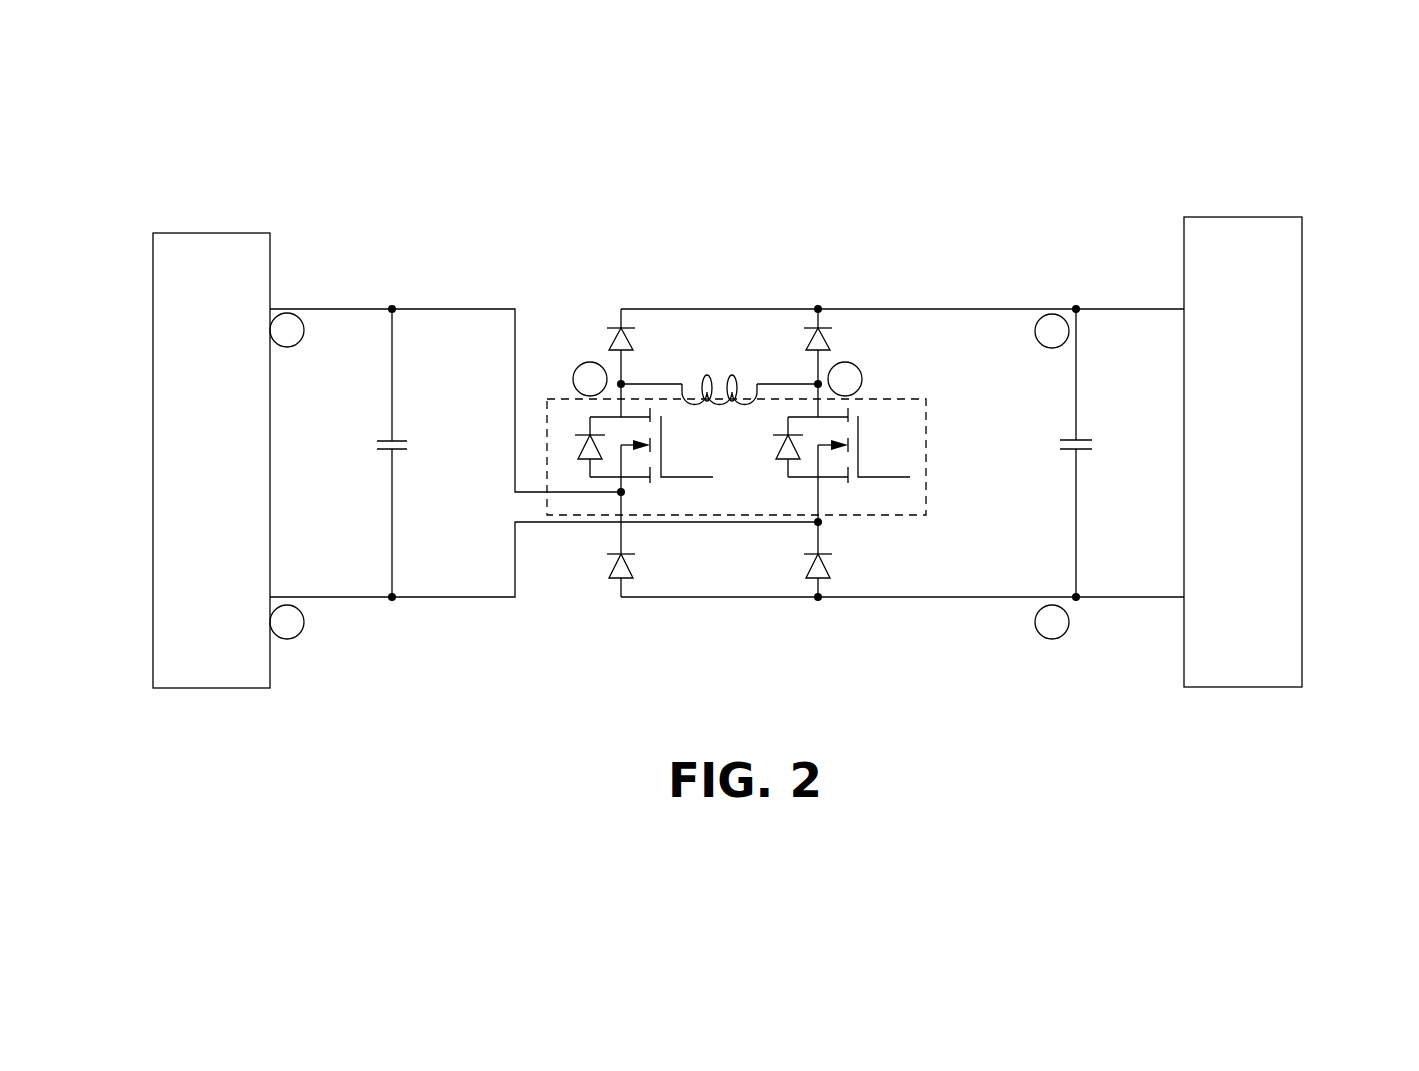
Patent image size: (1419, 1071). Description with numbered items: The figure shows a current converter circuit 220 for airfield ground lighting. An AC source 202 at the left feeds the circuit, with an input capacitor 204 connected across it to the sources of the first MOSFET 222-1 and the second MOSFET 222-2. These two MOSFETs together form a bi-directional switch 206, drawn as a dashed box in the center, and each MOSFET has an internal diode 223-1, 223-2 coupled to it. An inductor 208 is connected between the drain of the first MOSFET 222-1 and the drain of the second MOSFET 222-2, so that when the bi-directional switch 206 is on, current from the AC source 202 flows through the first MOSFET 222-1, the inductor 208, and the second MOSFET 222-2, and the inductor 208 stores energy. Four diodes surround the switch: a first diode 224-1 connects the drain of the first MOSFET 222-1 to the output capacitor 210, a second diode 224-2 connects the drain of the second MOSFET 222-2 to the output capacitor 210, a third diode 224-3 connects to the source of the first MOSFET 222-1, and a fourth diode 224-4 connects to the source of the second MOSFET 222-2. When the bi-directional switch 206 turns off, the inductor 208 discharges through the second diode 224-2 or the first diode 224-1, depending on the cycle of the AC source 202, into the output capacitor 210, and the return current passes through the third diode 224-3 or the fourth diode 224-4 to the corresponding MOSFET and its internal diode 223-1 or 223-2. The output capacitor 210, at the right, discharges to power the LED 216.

The current converter circuit 220 is at (272, 124).
The AC source 202 is at (153, 495).
The input capacitor 204 is at (386, 452).
The bi-directional switch 206 is at (927, 437).
The inductor 208 is at (712, 374).
The output capacitor 210 is at (1070, 453).
The LED 216 is at (1303, 470).
The first MOSFET 222-1 is at (640, 490).
The second MOSFET 222-2 is at (837, 490).
The internal diode 223-1 is at (575, 449).
The internal diode 223-2 is at (775, 458).
The first diode 224-1 is at (608, 340).
The second diode 224-2 is at (806, 340).
The third diode 224-3 is at (608, 568).
The fourth diode 224-4 is at (805, 568).